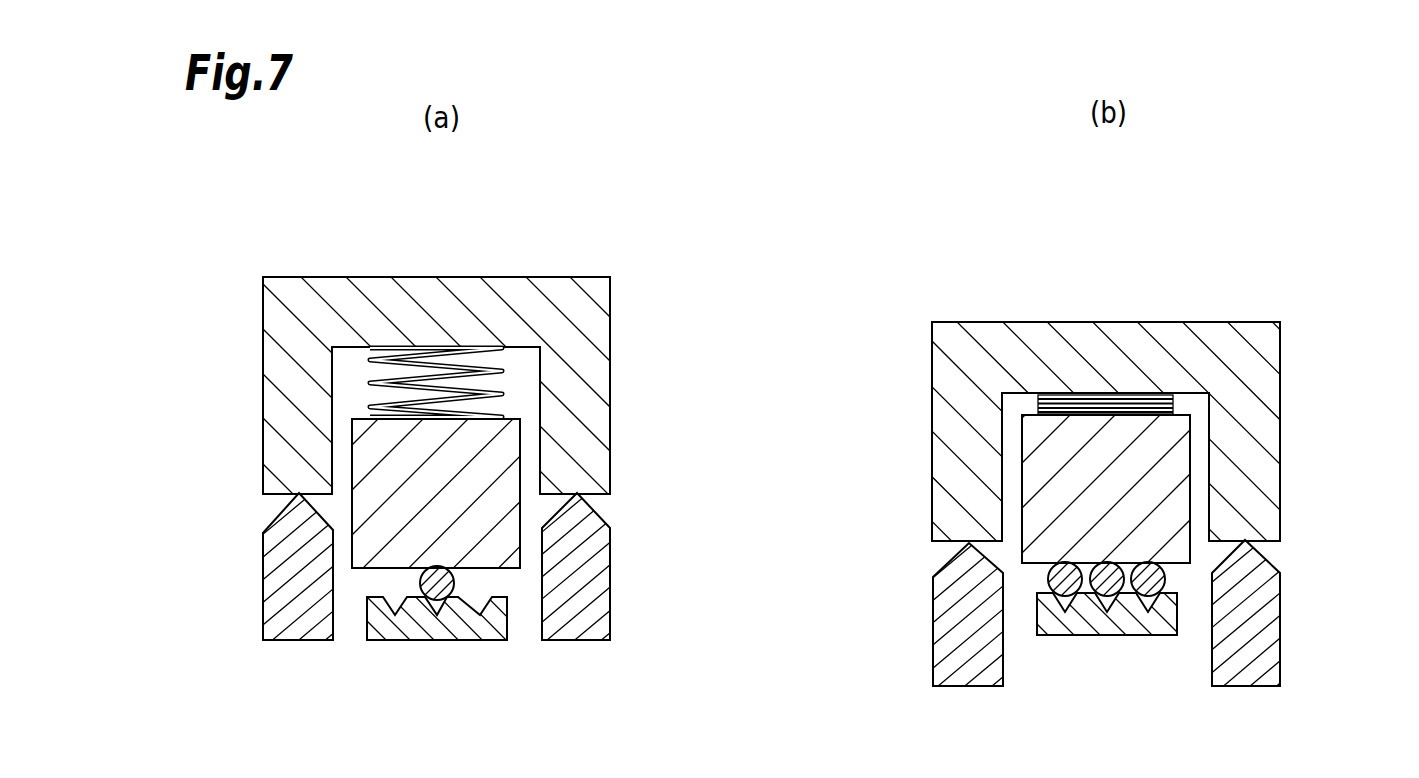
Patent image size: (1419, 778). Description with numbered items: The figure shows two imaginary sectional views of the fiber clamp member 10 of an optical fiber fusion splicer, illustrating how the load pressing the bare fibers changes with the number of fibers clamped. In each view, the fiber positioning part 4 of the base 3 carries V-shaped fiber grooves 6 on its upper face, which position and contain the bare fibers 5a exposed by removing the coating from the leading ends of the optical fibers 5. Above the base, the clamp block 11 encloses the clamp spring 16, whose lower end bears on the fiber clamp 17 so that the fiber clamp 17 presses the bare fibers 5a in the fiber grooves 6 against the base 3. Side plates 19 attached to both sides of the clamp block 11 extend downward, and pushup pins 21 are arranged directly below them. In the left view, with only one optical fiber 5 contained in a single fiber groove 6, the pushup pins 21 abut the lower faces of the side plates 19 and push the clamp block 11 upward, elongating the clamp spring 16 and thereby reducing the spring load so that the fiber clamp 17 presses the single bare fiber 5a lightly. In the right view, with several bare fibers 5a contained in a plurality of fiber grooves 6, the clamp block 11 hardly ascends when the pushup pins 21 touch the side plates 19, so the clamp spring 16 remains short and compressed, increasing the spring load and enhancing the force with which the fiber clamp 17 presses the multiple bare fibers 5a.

The fiber clamp member 10 is at (778, 414).
The clamp block 11 is at (778, 414).
The clamp spring 16 is at (380, 347).
The fiber clamp 17 is at (513, 520).
The side plate 19 is at (280, 413).
The pushup pin 21 is at (280, 605).
The fiber groove 6 is at (400, 620).
The fiber positioning part 4 is at (760, 642).
The base 3 is at (760, 642).
The bare fiber 5a is at (438, 622).
The optical fiber 5 is at (792, 655).